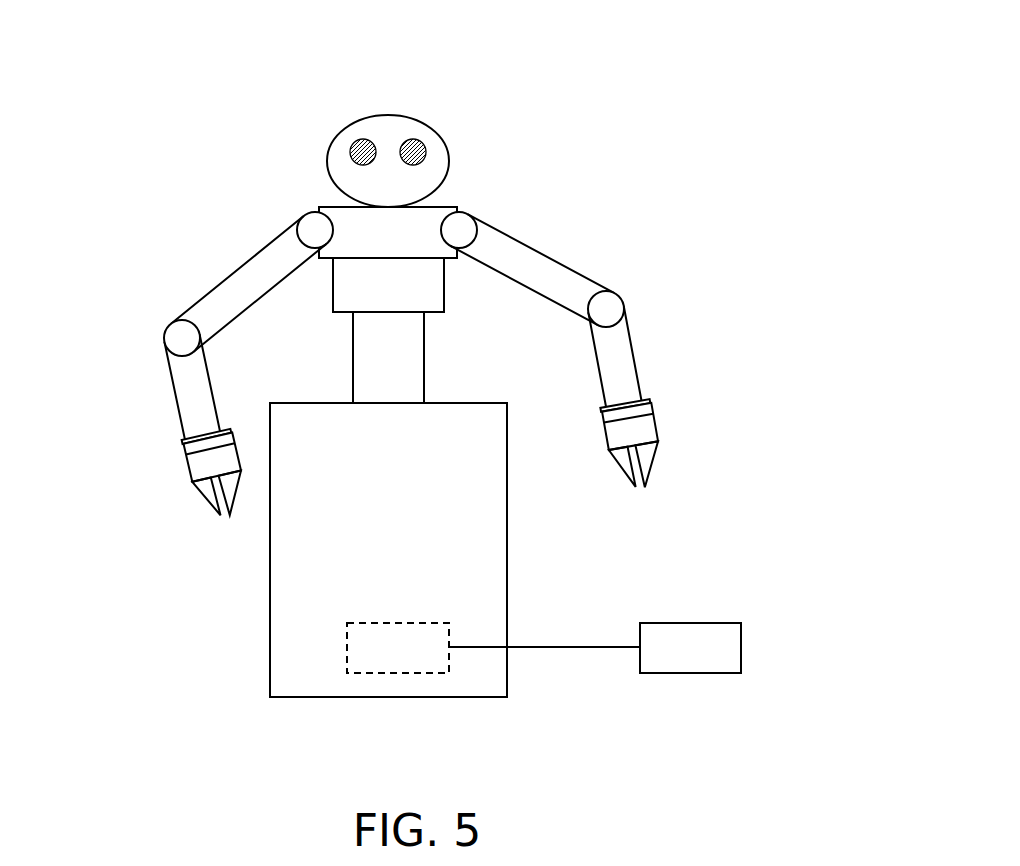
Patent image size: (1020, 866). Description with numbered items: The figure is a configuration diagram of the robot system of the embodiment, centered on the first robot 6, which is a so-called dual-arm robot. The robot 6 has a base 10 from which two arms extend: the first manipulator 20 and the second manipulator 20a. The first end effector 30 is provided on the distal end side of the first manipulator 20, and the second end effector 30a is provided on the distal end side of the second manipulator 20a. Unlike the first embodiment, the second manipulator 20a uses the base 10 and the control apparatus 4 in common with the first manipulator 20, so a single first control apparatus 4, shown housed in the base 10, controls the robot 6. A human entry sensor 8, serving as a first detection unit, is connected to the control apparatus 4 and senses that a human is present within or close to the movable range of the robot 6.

The first robot 6 is at (499, 84).
The first manipulator 20 is at (197, 292).
The second manipulator 20a is at (608, 278).
The first end effector 30 is at (202, 466).
The second end effector 30a is at (643, 435).
The base 10 is at (490, 592).
The first control apparatus 4 is at (418, 640).
The human entry sensor 8 is at (713, 637).